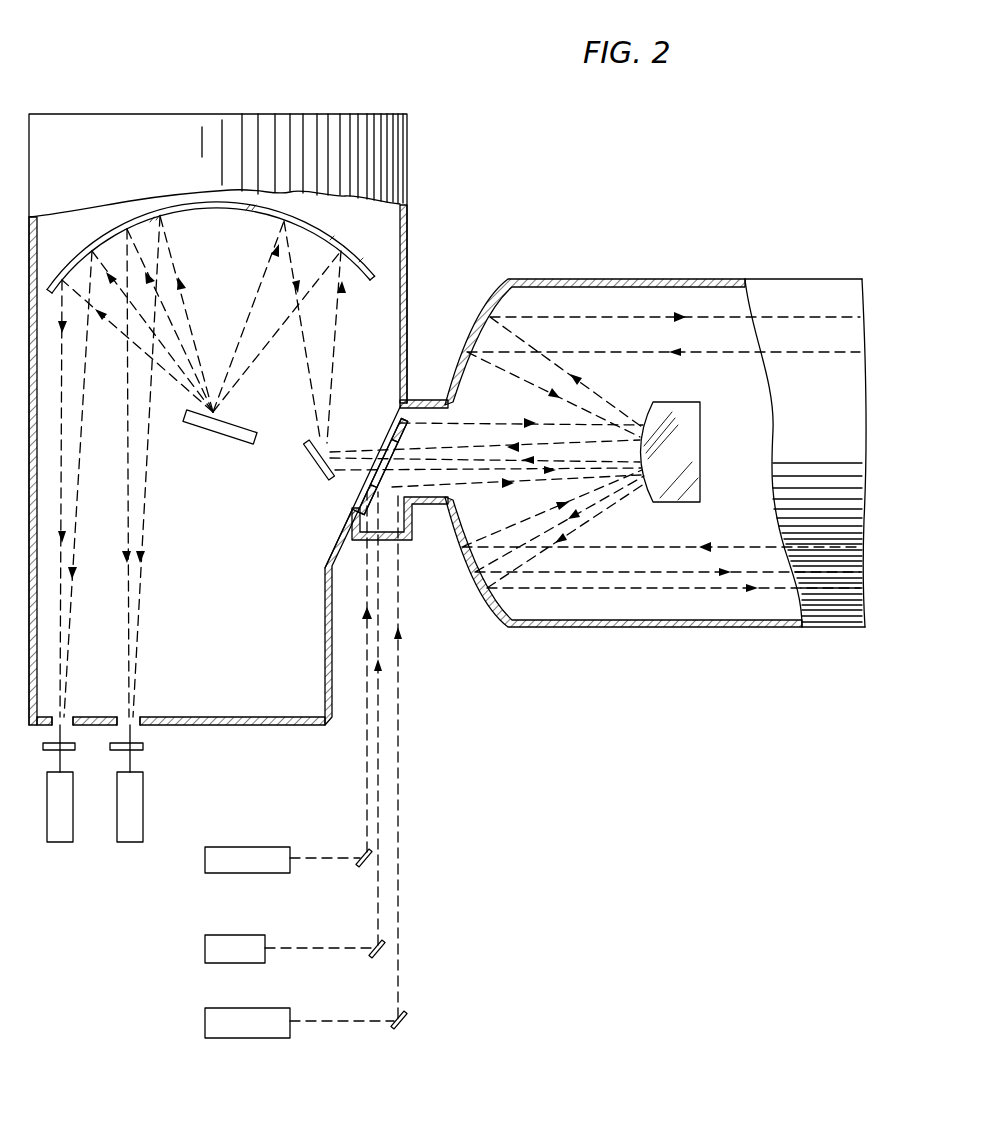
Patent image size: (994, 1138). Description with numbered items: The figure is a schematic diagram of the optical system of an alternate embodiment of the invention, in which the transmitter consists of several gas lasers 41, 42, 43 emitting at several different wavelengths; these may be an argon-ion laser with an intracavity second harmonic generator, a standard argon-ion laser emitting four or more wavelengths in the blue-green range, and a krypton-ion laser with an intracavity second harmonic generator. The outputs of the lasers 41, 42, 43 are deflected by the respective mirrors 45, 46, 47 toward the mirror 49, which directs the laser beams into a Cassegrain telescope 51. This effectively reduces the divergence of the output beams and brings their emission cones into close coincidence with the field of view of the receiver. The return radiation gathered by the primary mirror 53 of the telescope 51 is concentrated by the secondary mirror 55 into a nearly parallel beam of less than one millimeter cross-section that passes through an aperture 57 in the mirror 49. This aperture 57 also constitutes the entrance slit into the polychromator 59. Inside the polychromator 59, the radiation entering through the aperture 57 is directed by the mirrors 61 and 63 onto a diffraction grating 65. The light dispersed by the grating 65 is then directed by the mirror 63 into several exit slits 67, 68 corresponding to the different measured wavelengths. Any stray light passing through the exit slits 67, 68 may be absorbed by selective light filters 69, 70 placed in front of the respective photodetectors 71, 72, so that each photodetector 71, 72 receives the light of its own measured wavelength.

The gas laser 41 is at (210, 1029).
The gas laser 42 is at (211, 951).
The gas laser 43 is at (212, 863).
The mirror 45 is at (395, 1030).
The mirror 46 is at (378, 960).
The mirror 47 is at (358, 867).
The mirror 49 is at (378, 460).
The Cassegrain telescope 51 is at (728, 625).
The primary mirror 53 is at (449, 406).
The secondary mirror 55 is at (650, 492).
The aperture 57 is at (392, 440).
The polychromator 59 is at (240, 114).
The mirror 61 is at (306, 448).
The mirror 63 is at (212, 212).
The diffraction grating 65 is at (213, 423).
The exit slit 67 is at (133, 713).
The exit slit 68 is at (62, 713).
The selective light filter 69 is at (142, 747).
The selective light filter 70 is at (70, 748).
The photodetector 71 is at (130, 837).
The photodetector 72 is at (60, 837).